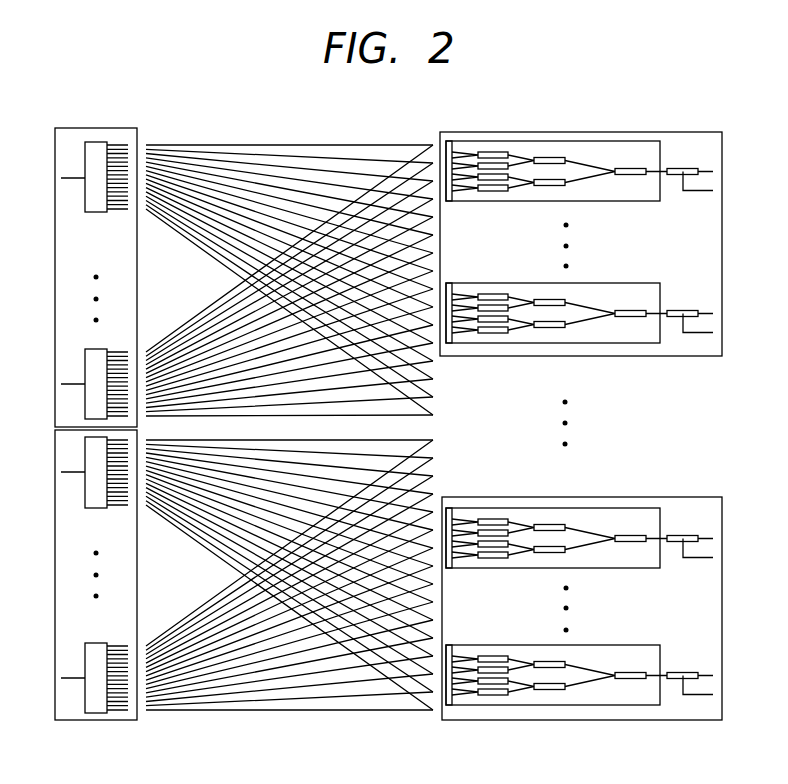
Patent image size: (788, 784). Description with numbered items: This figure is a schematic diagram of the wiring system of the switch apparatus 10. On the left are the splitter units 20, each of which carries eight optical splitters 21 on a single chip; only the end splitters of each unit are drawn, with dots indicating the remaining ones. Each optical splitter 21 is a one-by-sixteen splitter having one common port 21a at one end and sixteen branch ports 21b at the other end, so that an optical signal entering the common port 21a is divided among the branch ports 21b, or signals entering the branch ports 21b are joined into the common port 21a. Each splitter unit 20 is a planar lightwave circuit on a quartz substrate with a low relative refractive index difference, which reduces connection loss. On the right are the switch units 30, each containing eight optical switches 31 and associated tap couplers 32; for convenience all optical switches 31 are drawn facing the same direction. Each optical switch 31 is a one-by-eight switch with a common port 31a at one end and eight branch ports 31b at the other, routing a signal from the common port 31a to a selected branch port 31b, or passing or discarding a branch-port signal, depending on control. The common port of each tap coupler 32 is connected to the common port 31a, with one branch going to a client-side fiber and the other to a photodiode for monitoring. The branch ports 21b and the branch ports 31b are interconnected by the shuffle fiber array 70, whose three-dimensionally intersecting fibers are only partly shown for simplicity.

The switch apparatus 10 is at (60, 79).
The splitter unit 20 is at (138, 130).
The optical splitter 21 is at (100, 141).
The common port 21a is at (61, 196).
The branch ports 21b is at (129, 224).
The shuffle fiber array 70 is at (278, 130).
The switch unit 30 is at (638, 357).
The optical switch 31 is at (537, 140).
The common port 31a is at (668, 187).
The branch ports 31b is at (455, 209).
The tap coupler 32 is at (683, 165).